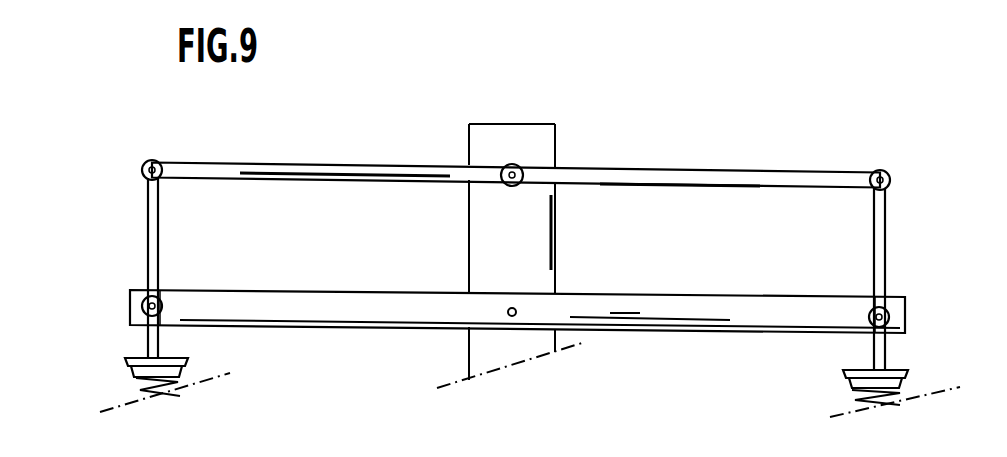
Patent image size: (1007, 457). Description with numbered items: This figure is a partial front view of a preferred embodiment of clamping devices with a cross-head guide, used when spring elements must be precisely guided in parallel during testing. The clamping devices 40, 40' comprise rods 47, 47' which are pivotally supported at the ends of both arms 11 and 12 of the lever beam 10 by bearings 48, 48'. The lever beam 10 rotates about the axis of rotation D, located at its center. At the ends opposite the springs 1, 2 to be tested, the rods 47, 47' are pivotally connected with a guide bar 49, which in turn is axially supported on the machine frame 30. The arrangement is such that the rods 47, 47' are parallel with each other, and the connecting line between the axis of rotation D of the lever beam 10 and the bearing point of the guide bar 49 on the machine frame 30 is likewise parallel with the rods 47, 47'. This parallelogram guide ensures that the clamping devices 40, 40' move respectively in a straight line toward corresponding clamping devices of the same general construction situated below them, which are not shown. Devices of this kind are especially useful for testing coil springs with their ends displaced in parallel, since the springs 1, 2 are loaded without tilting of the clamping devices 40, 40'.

The spring 1 is at (118, 377).
The spring 2 is at (840, 397).
The lever beam 10 is at (632, 338).
The arm 11 is at (313, 307).
The arm 12 is at (700, 315).
The machine frame 30 is at (570, 122).
The clamping device 40 is at (839, 377).
The clamping device 40' is at (188, 367).
The rod 47 is at (847, 279).
The rod 47' is at (120, 268).
The bearing 48 is at (899, 286).
The bearing 48' is at (181, 277).
The guide bar 49 is at (297, 164).
The axis of rotation D is at (513, 306).